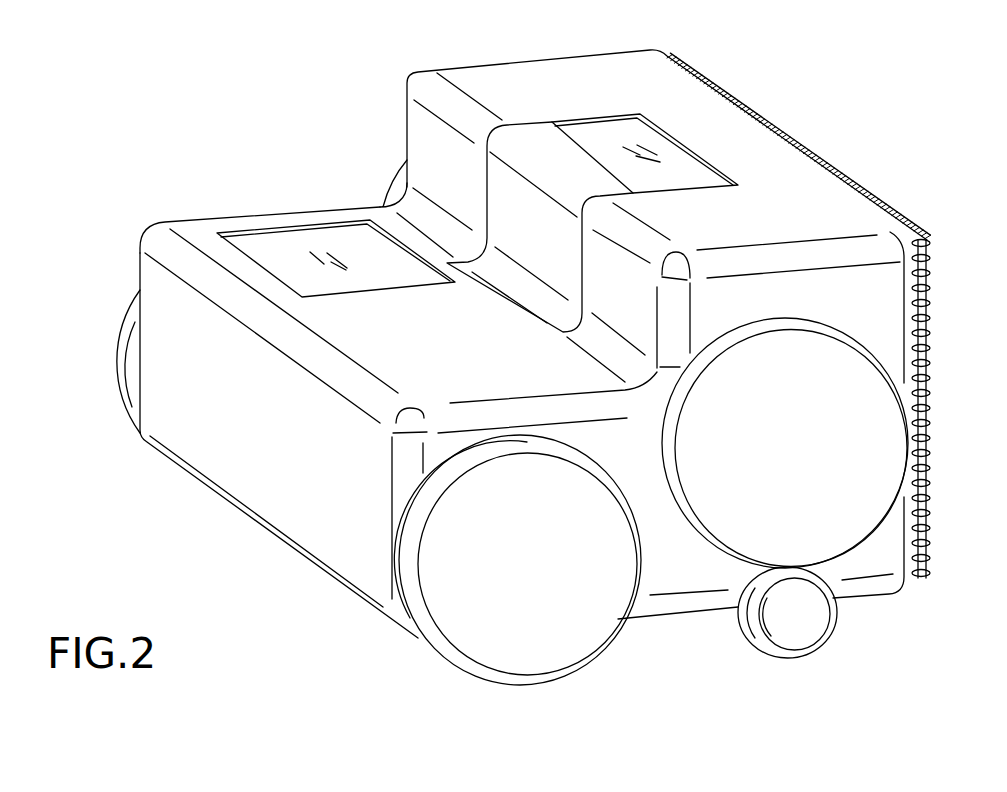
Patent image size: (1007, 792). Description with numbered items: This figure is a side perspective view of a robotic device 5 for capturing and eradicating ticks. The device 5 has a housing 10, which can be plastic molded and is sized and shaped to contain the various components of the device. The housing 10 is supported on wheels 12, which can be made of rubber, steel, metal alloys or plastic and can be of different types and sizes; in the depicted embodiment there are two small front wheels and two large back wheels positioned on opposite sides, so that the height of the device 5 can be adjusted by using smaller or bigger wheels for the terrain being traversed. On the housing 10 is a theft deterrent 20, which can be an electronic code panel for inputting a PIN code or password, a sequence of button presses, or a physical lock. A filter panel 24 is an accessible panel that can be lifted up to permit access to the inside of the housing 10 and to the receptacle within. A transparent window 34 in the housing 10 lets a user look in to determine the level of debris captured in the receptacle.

The robotic device 5 is at (130, 165).
The housing 10 is at (352, 212).
The wheels 12 is at (440, 648).
The theft deterrent 20 is at (260, 240).
The filter panel 24 is at (500, 183).
The transparent window 34 is at (628, 123).